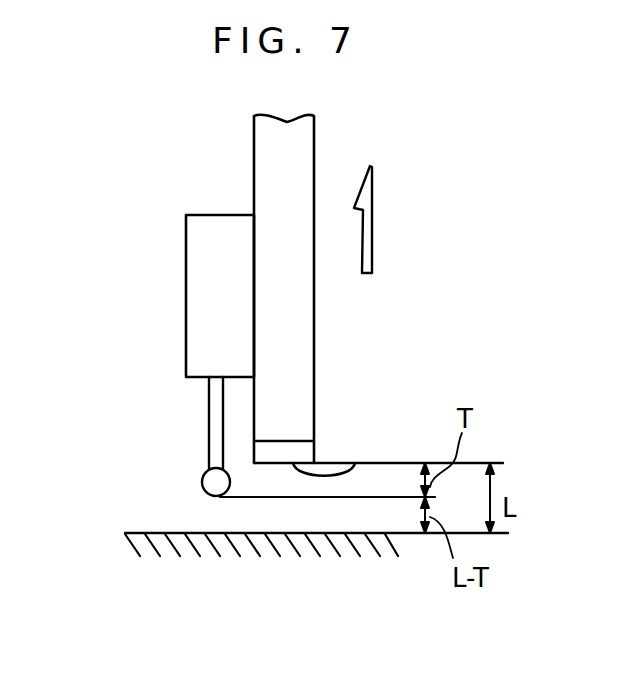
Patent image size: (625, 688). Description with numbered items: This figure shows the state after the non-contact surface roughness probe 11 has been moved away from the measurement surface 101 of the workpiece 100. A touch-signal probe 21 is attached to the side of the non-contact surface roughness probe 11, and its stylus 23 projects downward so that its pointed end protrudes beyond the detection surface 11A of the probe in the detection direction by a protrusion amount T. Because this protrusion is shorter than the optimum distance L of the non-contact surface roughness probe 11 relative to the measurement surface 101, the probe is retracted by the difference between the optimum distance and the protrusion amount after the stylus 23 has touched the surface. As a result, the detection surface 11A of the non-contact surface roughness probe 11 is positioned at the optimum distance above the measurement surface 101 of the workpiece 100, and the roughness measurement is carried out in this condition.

The non-contact surface roughness probe 11 is at (300, 345).
The detection surface 11A is at (352, 462).
The touch-signal probe 21 is at (190, 298).
The stylus 23 is at (208, 424).
The workpiece 100 is at (150, 553).
The measurement surface 101 is at (157, 532).